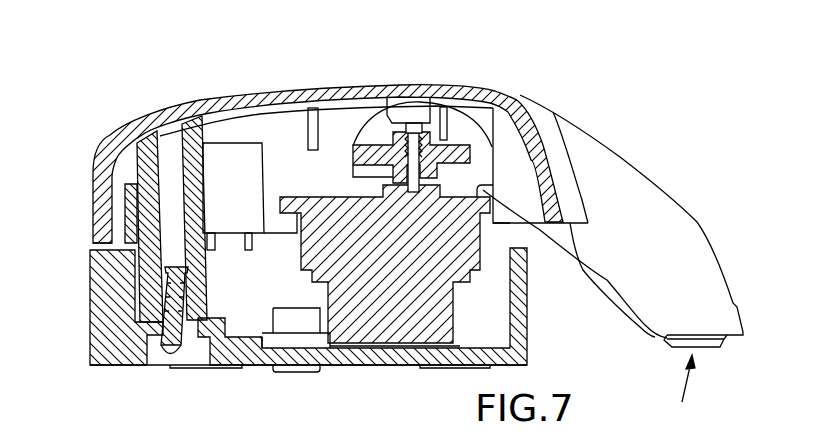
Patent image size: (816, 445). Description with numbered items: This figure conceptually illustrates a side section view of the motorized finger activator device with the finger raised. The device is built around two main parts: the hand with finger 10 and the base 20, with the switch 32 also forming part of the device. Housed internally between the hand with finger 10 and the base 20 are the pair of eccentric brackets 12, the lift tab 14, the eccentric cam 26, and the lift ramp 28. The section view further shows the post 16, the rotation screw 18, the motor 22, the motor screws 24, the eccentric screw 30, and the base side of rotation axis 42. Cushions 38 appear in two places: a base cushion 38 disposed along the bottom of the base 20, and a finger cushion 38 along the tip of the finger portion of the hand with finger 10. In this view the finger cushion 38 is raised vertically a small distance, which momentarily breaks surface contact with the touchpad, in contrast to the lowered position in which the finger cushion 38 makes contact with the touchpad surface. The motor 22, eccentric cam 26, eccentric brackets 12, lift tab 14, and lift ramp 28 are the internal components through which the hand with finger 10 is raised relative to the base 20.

The hand with finger 10 is at (533, 152).
The eccentric brackets 12 is at (357, 125).
The lift tab 14 is at (400, 113).
The post 16 is at (192, 180).
The rotation screw 18 is at (175, 337).
The base 20 is at (517, 353).
The motor 22 is at (440, 333).
The motor screws 24 is at (523, 227).
The eccentric cam 26 is at (447, 153).
The lift ramp 28 is at (403, 133).
The eccentric screw 30 is at (403, 133).
The switch 32 is at (230, 153).
The cushions 38 is at (295, 372).
The base side of rotation axis 42 is at (128, 212).